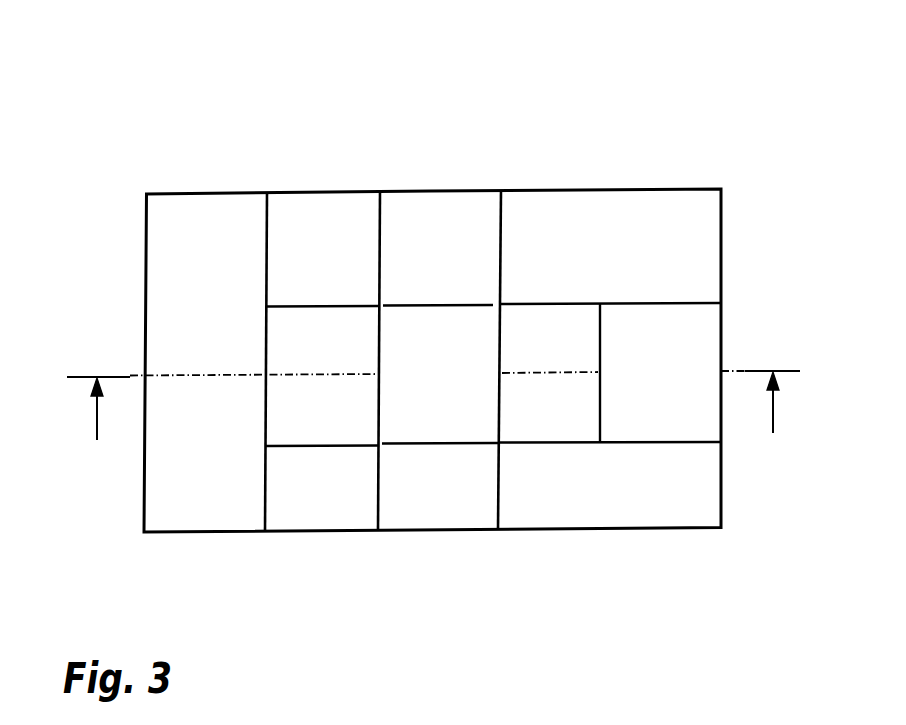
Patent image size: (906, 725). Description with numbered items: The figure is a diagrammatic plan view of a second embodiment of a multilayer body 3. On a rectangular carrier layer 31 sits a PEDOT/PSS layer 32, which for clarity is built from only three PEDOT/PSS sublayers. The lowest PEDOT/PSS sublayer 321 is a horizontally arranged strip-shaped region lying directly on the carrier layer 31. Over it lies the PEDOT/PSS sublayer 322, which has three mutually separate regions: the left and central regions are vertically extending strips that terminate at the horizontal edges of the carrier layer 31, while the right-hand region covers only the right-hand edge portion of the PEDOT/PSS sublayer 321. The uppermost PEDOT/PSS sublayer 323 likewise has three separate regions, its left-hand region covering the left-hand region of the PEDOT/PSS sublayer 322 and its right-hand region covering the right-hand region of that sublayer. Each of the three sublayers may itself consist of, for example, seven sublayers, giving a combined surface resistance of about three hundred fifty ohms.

The multilayer body 3 is at (664, 156).
The carrier layer 31 is at (698, 225).
The PEDOT/PSS layer 32 is at (455, 150).
The PEDOT/PSS sublayer 321 is at (298, 419).
The PEDOT/PSS sublayer 322 is at (440, 515).
The PEDOT/PSS sublayer 323 is at (793, 305).